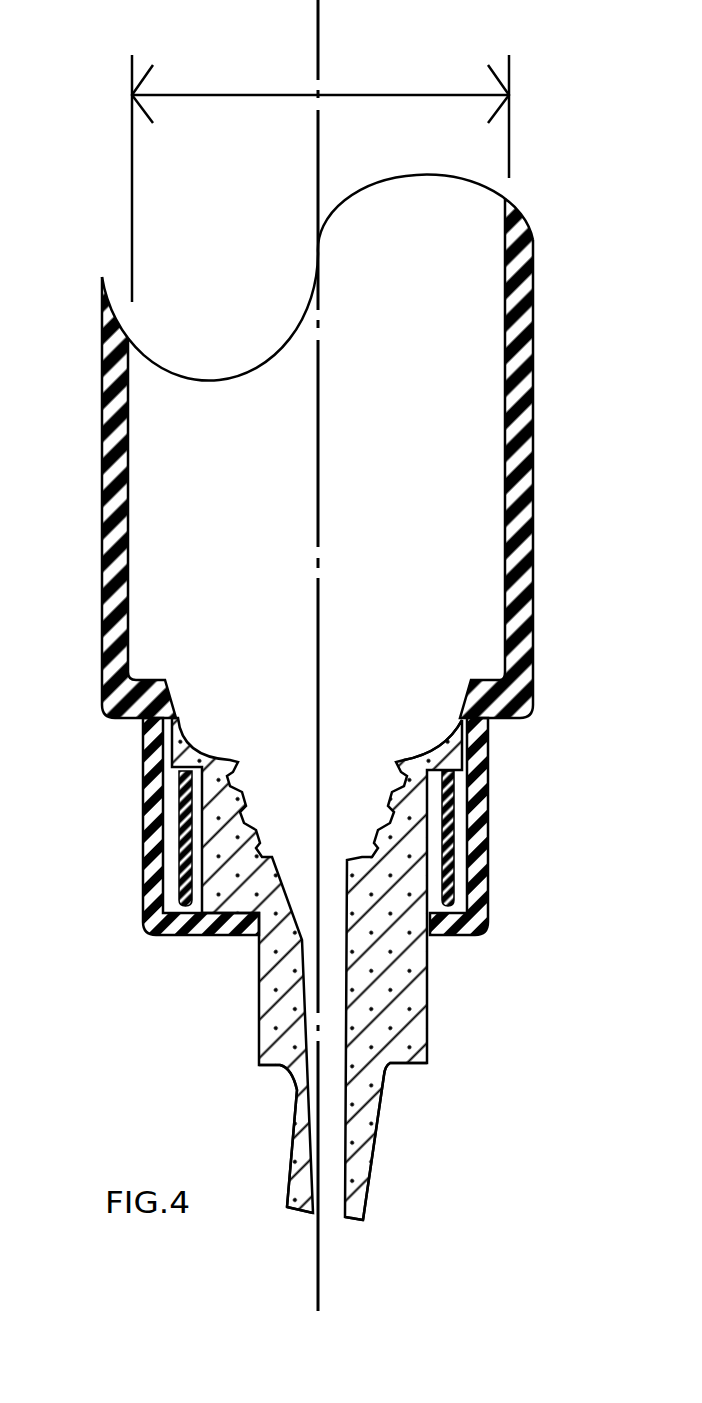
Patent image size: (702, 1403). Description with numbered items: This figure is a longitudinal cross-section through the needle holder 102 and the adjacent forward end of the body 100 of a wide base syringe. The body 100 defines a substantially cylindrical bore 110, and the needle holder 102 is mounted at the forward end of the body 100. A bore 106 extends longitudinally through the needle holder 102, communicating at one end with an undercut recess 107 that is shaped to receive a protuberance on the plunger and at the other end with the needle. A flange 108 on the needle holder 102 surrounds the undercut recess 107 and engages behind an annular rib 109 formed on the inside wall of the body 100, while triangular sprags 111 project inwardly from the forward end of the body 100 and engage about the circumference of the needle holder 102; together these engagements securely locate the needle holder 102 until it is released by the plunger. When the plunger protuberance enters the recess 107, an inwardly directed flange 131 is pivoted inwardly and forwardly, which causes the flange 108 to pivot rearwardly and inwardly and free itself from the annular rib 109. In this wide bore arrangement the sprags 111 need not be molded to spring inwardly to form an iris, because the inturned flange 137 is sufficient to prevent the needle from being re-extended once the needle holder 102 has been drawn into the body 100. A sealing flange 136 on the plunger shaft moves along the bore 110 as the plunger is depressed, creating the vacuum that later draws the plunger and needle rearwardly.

The body 100 is at (521, 563).
The bore 110 is at (506, 354).
The inturned flange 137 is at (132, 722).
The annular rib 109 is at (488, 737).
The flange 108 is at (488, 800).
The triangular sprags 111 is at (488, 882).
The sealing flange 136 is at (205, 923).
The undercut recess 107 is at (370, 803).
The inwardly directed flange 131 is at (402, 758).
The needle holder 102 is at (403, 1057).
The bore 106 is at (327, 1203).